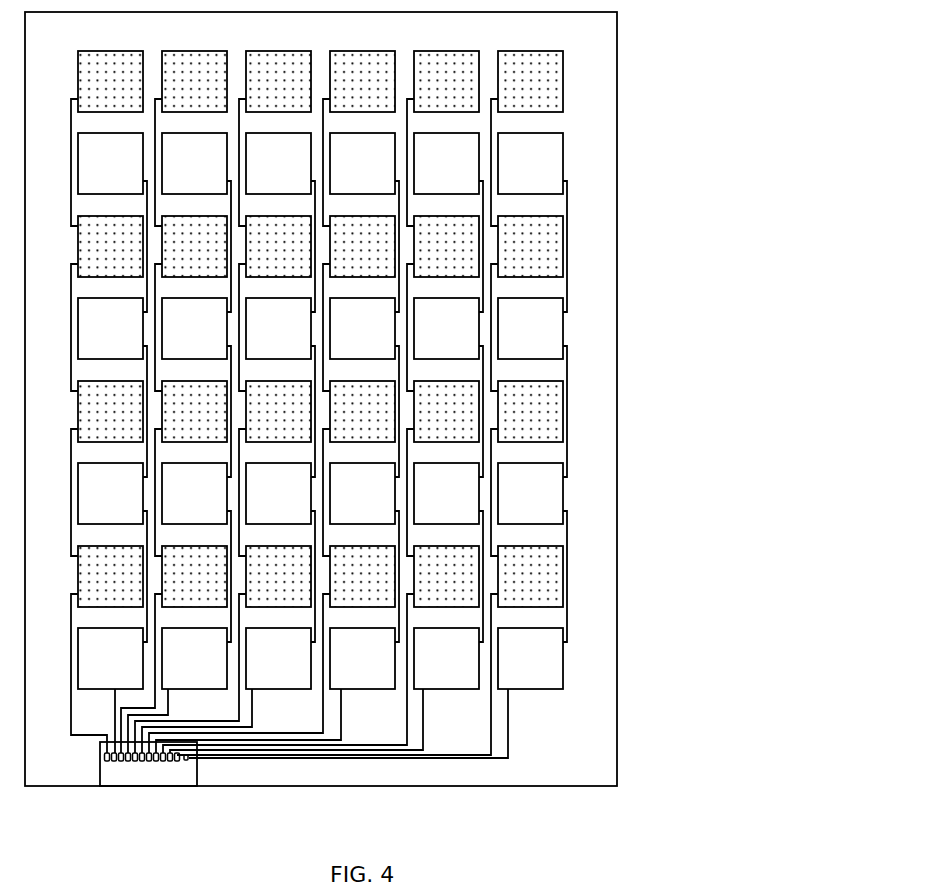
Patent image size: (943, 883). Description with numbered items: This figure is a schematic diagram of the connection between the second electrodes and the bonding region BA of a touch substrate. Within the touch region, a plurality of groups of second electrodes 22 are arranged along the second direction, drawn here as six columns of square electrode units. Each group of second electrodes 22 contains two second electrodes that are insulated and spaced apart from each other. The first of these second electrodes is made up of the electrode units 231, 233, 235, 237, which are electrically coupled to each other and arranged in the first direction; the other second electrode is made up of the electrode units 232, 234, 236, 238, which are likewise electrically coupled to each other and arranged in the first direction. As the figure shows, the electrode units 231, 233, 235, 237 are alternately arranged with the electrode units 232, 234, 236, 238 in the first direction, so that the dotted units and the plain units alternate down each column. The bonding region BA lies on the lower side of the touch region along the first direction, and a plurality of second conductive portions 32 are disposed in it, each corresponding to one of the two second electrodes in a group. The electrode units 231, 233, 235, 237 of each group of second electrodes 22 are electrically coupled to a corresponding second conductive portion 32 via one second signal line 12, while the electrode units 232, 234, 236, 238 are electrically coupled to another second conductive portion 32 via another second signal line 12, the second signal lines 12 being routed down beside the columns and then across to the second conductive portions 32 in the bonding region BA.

The group of second electrodes 22 is at (78, 72).
The electrode unit 231 is at (110, 81).
The electrode unit 232 is at (110, 163).
The electrode unit 233 is at (110, 246).
The electrode unit 234 is at (110, 328).
The electrode unit 235 is at (110, 411).
The electrode unit 236 is at (110, 493).
The electrode unit 237 is at (110, 576).
The electrode unit 238 is at (110, 658).
The second signal line 12 is at (512, 742).
The second conductive portion 32 is at (103, 758).
The bonding region BA is at (137, 780).